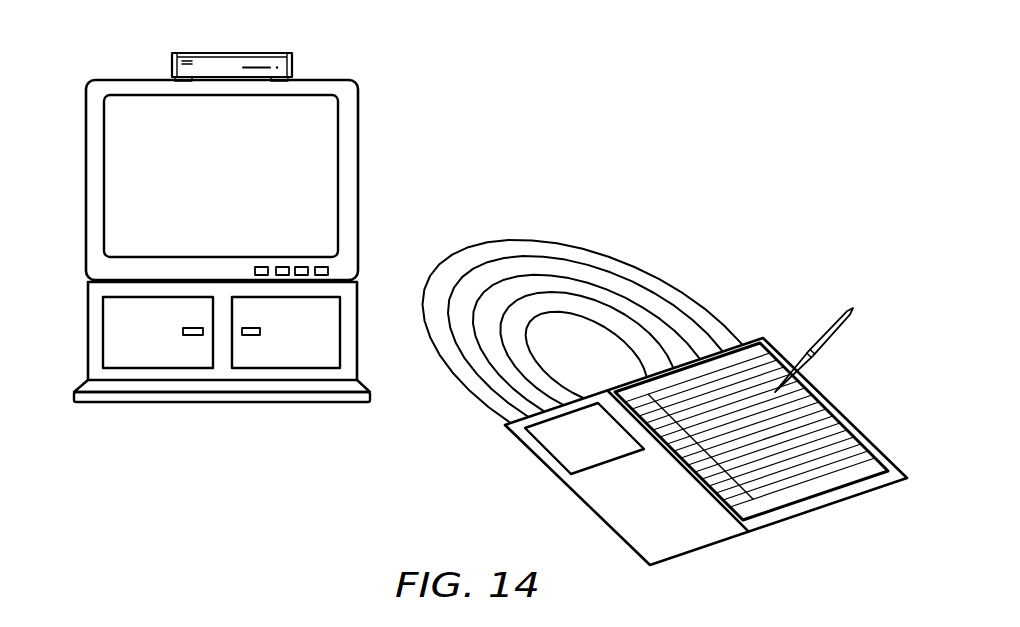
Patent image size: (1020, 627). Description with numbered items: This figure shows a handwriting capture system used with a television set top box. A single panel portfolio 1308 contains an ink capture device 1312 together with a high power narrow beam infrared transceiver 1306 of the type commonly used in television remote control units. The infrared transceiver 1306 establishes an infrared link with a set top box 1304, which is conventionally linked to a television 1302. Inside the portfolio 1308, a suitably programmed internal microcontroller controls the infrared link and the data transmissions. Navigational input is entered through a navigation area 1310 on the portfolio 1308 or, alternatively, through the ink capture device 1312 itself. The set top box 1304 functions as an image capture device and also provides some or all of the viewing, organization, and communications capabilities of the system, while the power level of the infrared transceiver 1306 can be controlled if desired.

The television 1302 is at (123, 80).
The set top box 1304 is at (222, 53).
The high power narrow beam infrared transceiver 1306 is at (635, 383).
The single panel portfolio 1308 is at (537, 452).
The navigation area 1310 is at (612, 460).
The ink capture device 1312 is at (832, 400).